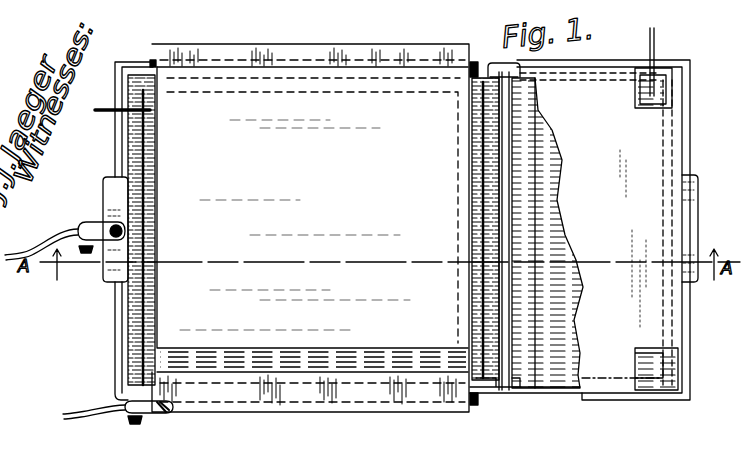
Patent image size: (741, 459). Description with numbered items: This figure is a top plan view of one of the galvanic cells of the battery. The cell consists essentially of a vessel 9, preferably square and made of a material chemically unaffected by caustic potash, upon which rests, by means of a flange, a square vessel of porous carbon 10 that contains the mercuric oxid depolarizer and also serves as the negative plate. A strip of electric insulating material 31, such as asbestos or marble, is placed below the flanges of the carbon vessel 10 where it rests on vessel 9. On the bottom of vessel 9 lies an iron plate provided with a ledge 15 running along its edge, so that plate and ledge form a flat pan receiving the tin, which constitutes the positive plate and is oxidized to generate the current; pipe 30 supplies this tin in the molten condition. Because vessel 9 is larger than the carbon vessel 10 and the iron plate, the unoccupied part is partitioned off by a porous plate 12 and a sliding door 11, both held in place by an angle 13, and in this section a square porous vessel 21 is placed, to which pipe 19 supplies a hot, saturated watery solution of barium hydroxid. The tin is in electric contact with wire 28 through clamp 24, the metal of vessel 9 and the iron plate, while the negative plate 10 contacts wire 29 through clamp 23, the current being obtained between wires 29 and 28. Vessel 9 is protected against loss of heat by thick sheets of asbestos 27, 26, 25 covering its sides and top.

The vessel 9 is at (685, 130).
The porous carbon vessel 10 is at (280, 60).
The sliding door 11 is at (506, 328).
The plate 12 is at (483, 263).
The angle 13 is at (512, 63).
The ledge 15 is at (473, 145).
The pipe 19 is at (657, 56).
The porous vessel 21 is at (538, 340).
The clamp 23 is at (144, 413).
The clamp 24 is at (105, 222).
The asbestos sheet 25 is at (312, 218).
The asbestos sheet 26 is at (623, 240).
The asbestos sheet 27 is at (114, 313).
The wire 28 is at (65, 241).
The wire 29 is at (78, 411).
The pipe 30 is at (117, 113).
The strip of electric insulating material 31 is at (151, 61).